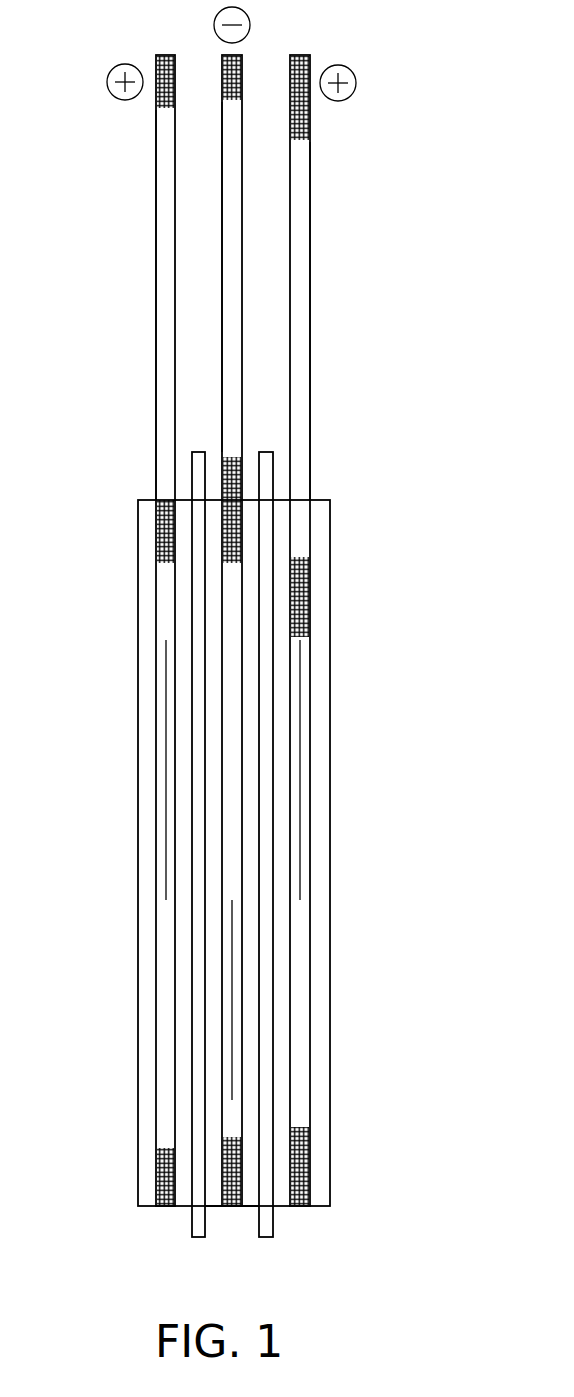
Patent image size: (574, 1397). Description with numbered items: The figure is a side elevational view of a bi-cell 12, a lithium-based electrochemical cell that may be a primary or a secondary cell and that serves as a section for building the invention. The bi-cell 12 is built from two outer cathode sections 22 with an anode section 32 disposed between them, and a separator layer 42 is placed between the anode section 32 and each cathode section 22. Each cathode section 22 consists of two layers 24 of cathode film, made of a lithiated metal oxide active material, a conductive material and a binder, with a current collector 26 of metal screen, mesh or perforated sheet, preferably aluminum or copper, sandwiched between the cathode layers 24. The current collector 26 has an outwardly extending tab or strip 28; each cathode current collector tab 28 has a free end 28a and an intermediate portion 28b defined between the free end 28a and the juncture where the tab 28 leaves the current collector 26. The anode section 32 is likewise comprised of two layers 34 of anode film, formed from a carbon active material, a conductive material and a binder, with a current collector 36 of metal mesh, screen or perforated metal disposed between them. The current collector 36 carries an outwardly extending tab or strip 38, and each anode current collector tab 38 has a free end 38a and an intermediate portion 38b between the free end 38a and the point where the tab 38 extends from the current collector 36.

The bi-cell 12 is at (436, 393).
The cathode section 22 is at (332, 1082).
The cathode film layer 24 is at (183, 825).
The current collector 26 is at (167, 771).
The cathode current collector tab 28 is at (311, 215).
The free end 28a is at (155, 60).
The intermediate portion 28b is at (302, 350).
The anode section 32 is at (237, 1210).
The anode film layer 34 is at (212, 940).
The current collector 36 is at (230, 1027).
The anode current collector tab 38 is at (243, 190).
The free end 38a is at (242, 62).
The intermediate portion 38b is at (235, 315).
The separator layer 42 is at (202, 735).